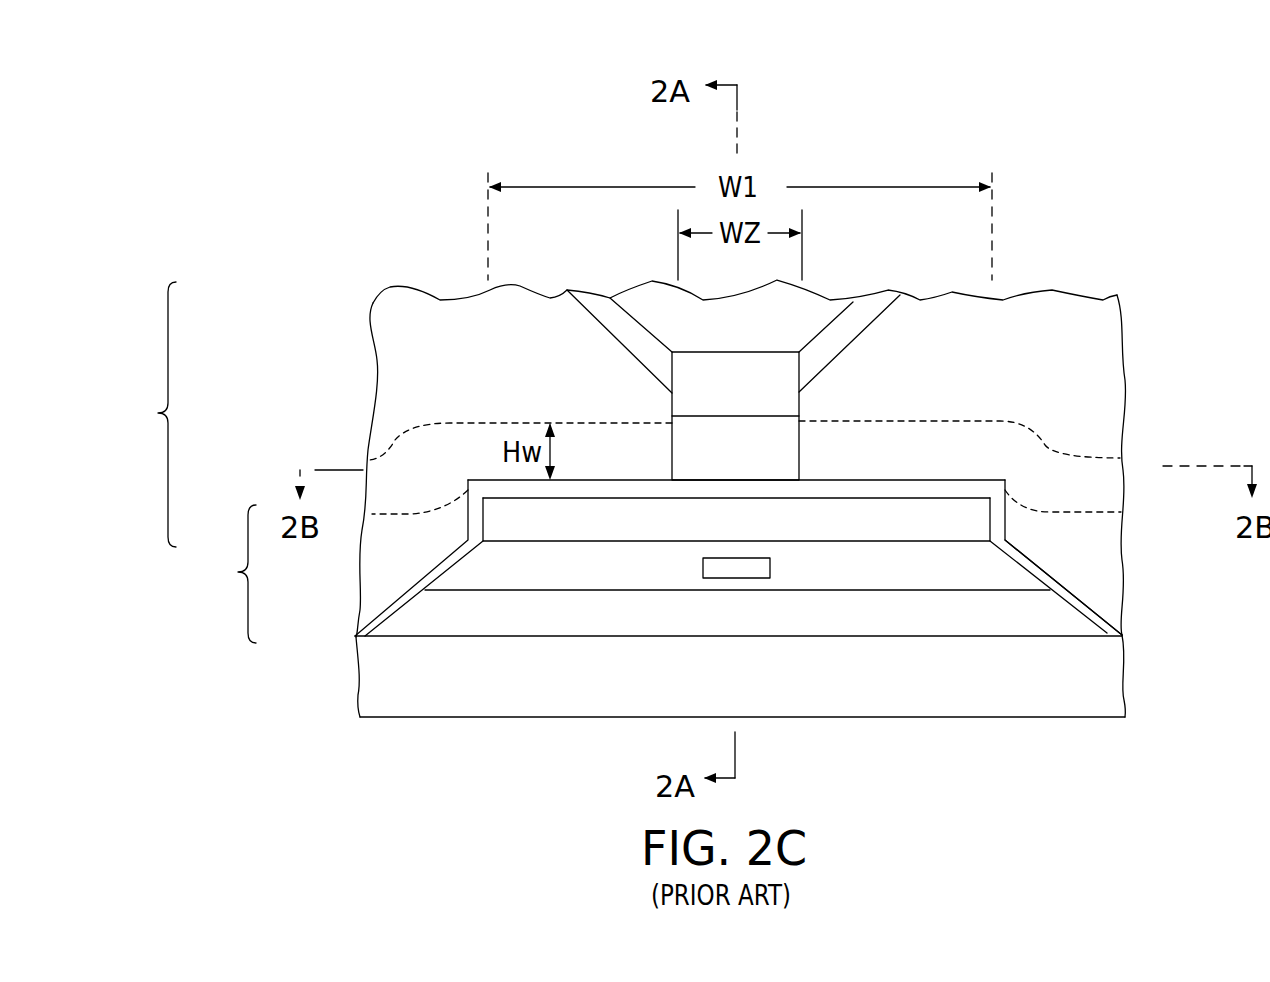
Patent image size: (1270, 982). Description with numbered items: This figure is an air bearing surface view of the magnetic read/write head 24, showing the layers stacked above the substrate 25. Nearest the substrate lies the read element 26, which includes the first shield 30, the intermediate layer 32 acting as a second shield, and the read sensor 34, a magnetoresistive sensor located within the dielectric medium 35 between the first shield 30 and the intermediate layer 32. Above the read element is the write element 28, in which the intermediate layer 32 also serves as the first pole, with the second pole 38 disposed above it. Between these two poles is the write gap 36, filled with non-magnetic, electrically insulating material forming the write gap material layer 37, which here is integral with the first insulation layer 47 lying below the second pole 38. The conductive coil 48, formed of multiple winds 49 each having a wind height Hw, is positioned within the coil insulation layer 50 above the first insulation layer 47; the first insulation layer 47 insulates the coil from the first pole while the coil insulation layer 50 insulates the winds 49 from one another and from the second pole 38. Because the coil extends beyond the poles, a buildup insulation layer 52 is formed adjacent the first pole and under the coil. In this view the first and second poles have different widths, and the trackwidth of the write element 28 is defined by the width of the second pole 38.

The magnetic read/write head 24 is at (1056, 194).
The substrate 25 is at (411, 697).
The read element 26 is at (230, 574).
The write element 28 is at (150, 414).
The first shield 30 is at (438, 631).
The intermediate layer 32 is at (516, 536).
The read sensor 34 is at (703, 568).
The dielectric medium 35 is at (486, 581).
The write gap 36 is at (682, 484).
The write gap material layer 37 is at (763, 488).
The second pole 38 is at (743, 464).
The first insulation layer 47 is at (1098, 610).
The conductive coil 48 is at (950, 386).
The winds 49 is at (944, 469).
The coil insulation layer 50 is at (426, 371).
The buildup insulation layer 52 is at (386, 562).